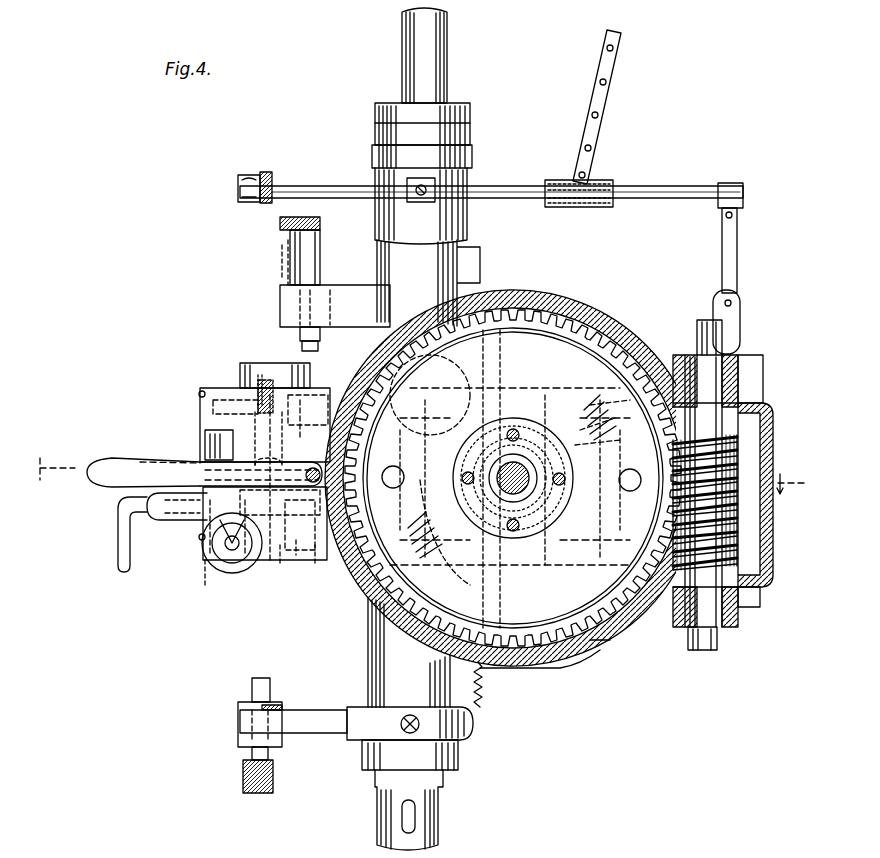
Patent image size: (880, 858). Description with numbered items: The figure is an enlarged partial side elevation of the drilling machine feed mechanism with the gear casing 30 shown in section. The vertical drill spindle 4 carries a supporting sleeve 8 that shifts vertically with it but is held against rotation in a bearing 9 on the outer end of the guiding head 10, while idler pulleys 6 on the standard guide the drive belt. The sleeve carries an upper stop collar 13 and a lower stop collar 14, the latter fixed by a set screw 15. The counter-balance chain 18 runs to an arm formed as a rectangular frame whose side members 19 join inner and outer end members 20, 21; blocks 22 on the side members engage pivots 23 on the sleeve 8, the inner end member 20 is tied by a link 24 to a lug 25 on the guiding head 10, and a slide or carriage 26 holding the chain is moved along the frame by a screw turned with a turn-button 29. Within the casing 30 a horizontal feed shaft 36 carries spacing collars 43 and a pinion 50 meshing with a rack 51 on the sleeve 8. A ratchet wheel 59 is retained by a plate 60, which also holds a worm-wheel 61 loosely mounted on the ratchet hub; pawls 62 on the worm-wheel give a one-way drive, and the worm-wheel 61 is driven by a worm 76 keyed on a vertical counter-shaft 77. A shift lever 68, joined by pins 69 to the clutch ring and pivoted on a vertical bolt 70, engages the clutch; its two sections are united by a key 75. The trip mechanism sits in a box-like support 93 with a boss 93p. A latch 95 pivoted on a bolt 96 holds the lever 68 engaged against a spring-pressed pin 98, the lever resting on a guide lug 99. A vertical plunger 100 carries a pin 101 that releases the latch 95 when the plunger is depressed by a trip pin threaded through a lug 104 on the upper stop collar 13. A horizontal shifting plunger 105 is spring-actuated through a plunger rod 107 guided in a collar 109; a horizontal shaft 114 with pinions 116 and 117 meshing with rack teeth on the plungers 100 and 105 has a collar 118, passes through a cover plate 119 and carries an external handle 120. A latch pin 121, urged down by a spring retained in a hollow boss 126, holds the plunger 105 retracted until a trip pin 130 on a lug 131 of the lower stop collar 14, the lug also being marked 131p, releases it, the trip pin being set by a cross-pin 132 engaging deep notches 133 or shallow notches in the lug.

The drill spindle 4 is at (446, 50).
The idler pulleys 6 is at (415, 476).
The supporting sleeve 8 is at (368, 657).
The bearing 9 is at (335, 585).
The guiding head 10 is at (620, 312).
The upper stop collar 13 is at (343, 286).
The lower stop collar 14 is at (473, 733).
The set screw 15 is at (425, 738).
The chain 18 is at (605, 90).
The side members 19 is at (662, 200).
The inner end member 20 is at (744, 196).
The outer end member 21 is at (240, 196).
The blocks 22 is at (455, 212).
The pivots 23 is at (407, 196).
The link 24 is at (738, 268).
The lug 25 is at (740, 312).
The slide or carriage 26 is at (598, 207).
The turn-button 29 is at (268, 172).
The casing 30 is at (610, 660).
The feed shaft 36 is at (516, 472).
The spacing collars 43 is at (540, 490).
The pinion 50 is at (530, 505).
The rack 51 is at (488, 688).
The ratchet wheel 59 is at (585, 553).
The plate 60 is at (548, 555).
The worm-wheel 61 is at (612, 642).
The pawls 62 is at (633, 470).
The shift lever 68 is at (440, 390).
The pins 69 is at (511, 479).
The vertical pivot bolt 70 is at (580, 500).
The key 75 is at (78, 513).
The worm 76 is at (760, 530).
The vertical counter-shaft 77 is at (722, 328).
The support 93 is at (318, 388).
The boss 93p is at (220, 575).
The latch 95 is at (205, 438).
The bolt 96 is at (205, 455).
The spring-pressed pin 98 is at (312, 468).
The guide lug 99 is at (215, 538).
The plunger 100 is at (310, 362).
The pin 101 is at (255, 385).
The lug 104 is at (280, 294).
The shifting member or plunger 105 is at (285, 302).
The plunger rod 107 is at (238, 560).
The collar 109 is at (220, 555).
The horizontal shaft 114 is at (150, 493).
The pinion 116 is at (296, 555).
The pinion 117 is at (280, 565).
The collar 118 is at (315, 565).
The cover plate 119 is at (200, 388).
The external handle 120 is at (118, 558).
The latch pin 121 is at (258, 606).
The hollow boss 126 is at (260, 363).
The trip pin 130 is at (252, 690).
The lug 131 is at (282, 738).
The lever end 131p is at (238, 720).
The small pin 132 is at (272, 705).
The deep notches 133 is at (248, 728).